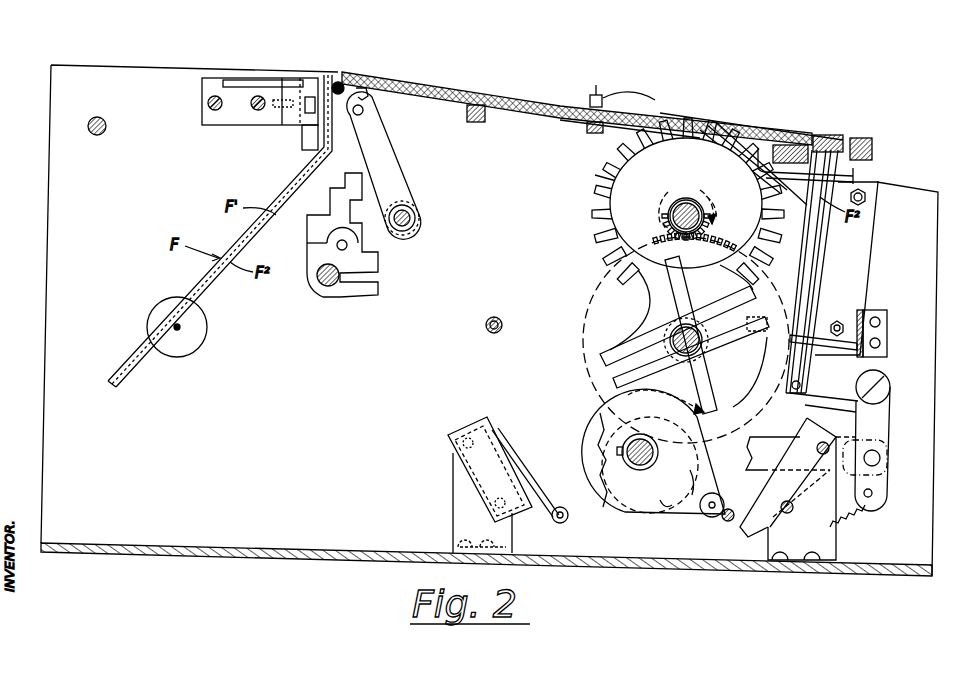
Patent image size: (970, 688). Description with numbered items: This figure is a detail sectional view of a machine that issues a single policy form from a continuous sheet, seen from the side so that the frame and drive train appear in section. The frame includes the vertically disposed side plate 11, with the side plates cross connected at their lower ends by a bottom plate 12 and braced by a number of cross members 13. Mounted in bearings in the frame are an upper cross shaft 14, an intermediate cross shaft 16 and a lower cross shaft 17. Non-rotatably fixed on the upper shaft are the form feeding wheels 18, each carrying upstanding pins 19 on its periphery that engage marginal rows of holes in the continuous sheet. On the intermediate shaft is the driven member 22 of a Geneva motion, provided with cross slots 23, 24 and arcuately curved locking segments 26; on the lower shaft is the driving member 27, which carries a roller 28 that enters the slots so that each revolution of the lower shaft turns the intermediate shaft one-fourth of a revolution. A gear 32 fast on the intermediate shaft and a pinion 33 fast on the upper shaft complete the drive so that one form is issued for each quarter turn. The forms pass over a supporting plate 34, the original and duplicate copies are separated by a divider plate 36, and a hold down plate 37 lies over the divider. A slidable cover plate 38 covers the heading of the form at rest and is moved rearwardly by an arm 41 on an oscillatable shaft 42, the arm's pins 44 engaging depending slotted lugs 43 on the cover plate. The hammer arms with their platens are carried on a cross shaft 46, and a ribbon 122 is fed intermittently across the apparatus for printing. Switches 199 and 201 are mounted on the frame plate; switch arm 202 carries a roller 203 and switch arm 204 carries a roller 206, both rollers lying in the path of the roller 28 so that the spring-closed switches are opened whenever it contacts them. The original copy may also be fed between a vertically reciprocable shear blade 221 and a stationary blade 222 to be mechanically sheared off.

The side plate 11 is at (50, 352).
The bottom plate 12 is at (222, 545).
The cross members 13 is at (106, 126).
The upper cross shaft 14 is at (688, 200).
The intermediate cross shaft 16 is at (703, 345).
The lower cross shaft 17 is at (633, 470).
The form feeding wheels 18 is at (605, 190).
The pins 19 is at (600, 178).
The driven member 22 is at (592, 364).
The cross slot 23 is at (640, 272).
The cross slot 24 is at (658, 385).
The locking segments 26 is at (600, 316).
The driving member 27 is at (573, 416).
The roller 28 is at (710, 518).
The gear 32 is at (722, 228).
The pinion 33 is at (666, 226).
The supporting plate 34 is at (530, 120).
The divider plate 36 is at (710, 128).
The hold down plate 37 is at (776, 125).
The cover plate 38 is at (425, 84).
The arm 41 is at (378, 150).
The oscillatable shaft 42 is at (410, 212).
The slotted lugs 43 is at (368, 95).
The pins 44 is at (365, 116).
The cross shaft 46 is at (327, 287).
The ribbon 122 is at (336, 82).
The switch 199 is at (478, 462).
The switch 201 is at (845, 432).
The switch arm 202 is at (535, 490).
The roller 203 is at (570, 516).
The switch arm 204 is at (750, 520).
The roller 206 is at (730, 521).
The shear blade 221 is at (855, 137).
The stationary blade 222 is at (855, 177).